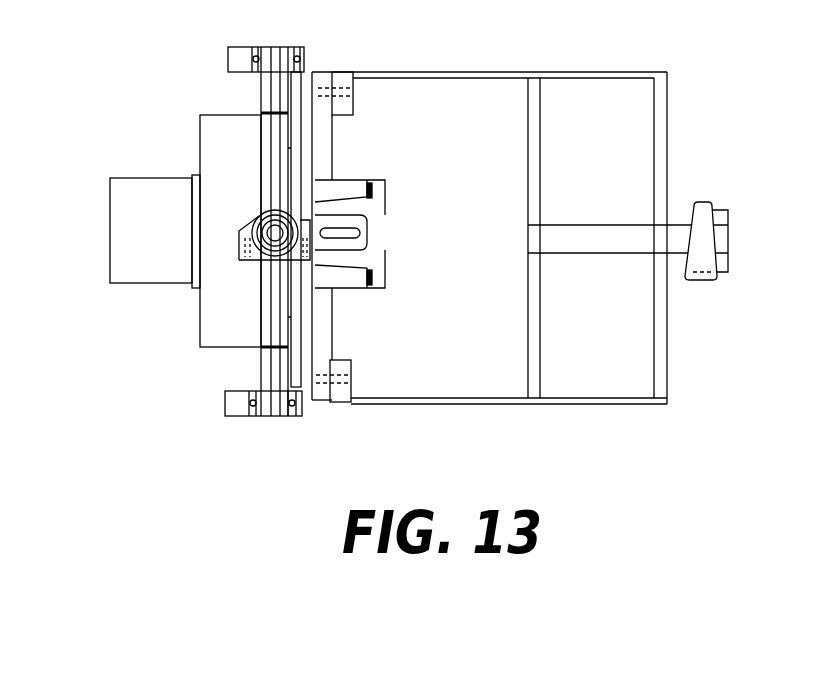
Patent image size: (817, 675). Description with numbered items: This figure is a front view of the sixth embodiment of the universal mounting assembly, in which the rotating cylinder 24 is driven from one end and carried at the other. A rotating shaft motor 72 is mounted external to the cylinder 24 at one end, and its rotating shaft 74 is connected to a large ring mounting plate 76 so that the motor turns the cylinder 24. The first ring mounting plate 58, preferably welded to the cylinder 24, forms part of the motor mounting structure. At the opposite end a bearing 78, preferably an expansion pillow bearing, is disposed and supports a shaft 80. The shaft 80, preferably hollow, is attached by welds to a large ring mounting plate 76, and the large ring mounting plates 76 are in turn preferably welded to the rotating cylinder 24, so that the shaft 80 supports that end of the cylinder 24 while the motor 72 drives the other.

The cylinder 24 is at (403, 77).
The first ring mounting plate 58 is at (352, 392).
The rotating shaft motor 72 is at (147, 193).
The rotating shaft 74 is at (343, 184).
The large ring mounting plate 76 is at (658, 125).
The bearing 78 is at (712, 201).
The shaft 80 is at (593, 224).